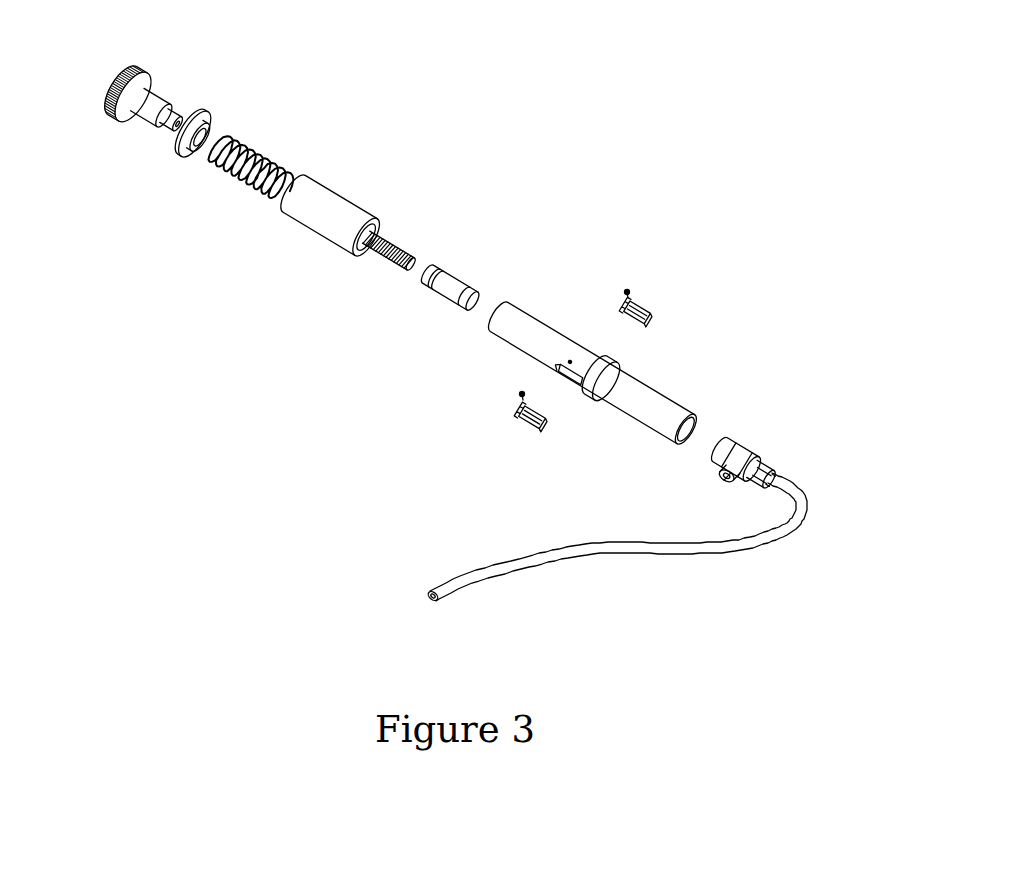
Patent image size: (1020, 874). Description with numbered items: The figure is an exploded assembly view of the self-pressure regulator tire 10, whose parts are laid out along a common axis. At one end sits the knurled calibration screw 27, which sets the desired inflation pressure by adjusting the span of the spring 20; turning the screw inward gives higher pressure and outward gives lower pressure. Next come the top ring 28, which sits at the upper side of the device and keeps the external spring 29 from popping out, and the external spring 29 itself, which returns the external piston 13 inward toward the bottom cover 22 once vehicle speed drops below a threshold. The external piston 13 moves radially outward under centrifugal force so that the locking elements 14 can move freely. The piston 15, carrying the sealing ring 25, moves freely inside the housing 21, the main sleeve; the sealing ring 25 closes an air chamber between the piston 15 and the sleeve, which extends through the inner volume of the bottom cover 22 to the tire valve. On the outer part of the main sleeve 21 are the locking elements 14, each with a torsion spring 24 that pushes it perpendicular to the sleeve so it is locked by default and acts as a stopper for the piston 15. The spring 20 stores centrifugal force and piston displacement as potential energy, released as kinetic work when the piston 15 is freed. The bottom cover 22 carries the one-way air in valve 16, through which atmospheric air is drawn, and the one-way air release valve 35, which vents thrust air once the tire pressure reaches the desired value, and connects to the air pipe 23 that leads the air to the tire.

The self-pressure regulator tire 10 is at (646, 51).
The external piston 13 is at (322, 223).
The locking element 14 is at (654, 322).
The piston 15 is at (462, 281).
The one-way air in valve 16 is at (727, 473).
The spring 20 is at (397, 242).
The housing 21 is at (520, 334).
The bottom cover 22 is at (737, 437).
The air pipe 23 is at (793, 480).
The torsion spring 24 is at (627, 289).
The sealing ring 25 is at (452, 306).
The calibration screw 27 is at (105, 90).
The top ring 28 is at (170, 152).
The external spring 29 is at (230, 185).
The one-way air release valve 35 is at (757, 440).